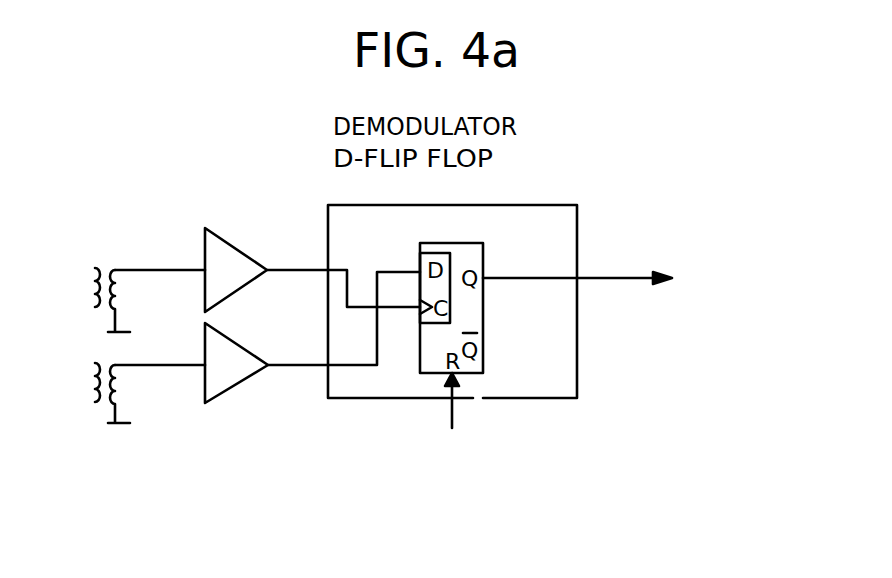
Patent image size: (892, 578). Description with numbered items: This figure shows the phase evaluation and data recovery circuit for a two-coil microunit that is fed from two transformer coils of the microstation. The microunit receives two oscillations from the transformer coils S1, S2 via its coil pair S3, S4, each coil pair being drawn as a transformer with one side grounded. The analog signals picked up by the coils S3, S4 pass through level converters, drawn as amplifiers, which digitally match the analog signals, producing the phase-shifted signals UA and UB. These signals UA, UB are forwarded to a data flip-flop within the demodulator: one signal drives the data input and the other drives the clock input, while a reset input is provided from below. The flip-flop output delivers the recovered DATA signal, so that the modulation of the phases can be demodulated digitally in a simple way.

The transformer coil S1 is at (77, 288).
The transformer coil S2 is at (77, 382).
The coil of the coil pair S3 is at (147, 422).
The coil of the coil pair S4 is at (139, 269).
The phase-shifted signal UA is at (343, 275).
The phase-shifted signal UB is at (344, 318).
The data output DATA is at (610, 277).